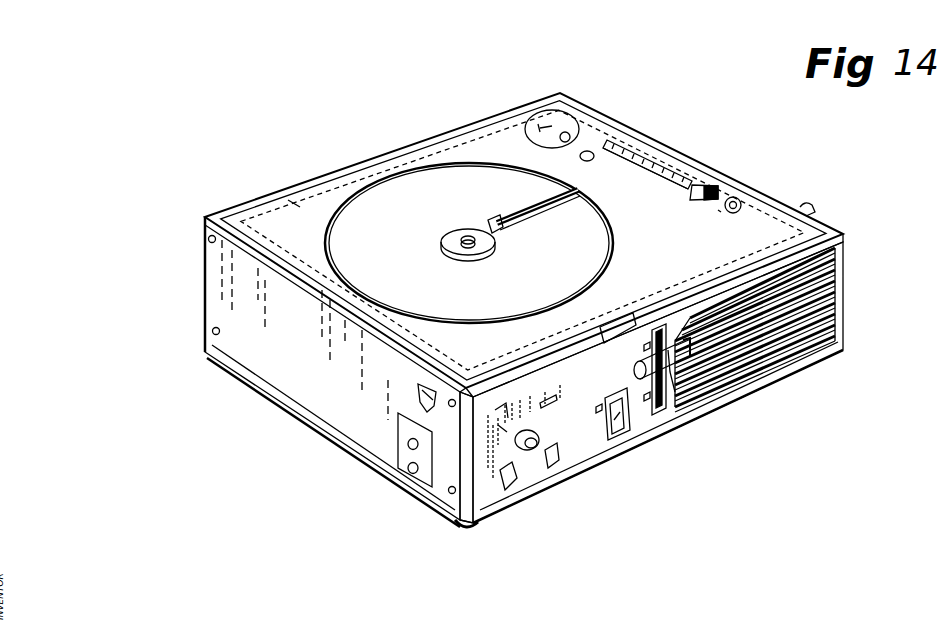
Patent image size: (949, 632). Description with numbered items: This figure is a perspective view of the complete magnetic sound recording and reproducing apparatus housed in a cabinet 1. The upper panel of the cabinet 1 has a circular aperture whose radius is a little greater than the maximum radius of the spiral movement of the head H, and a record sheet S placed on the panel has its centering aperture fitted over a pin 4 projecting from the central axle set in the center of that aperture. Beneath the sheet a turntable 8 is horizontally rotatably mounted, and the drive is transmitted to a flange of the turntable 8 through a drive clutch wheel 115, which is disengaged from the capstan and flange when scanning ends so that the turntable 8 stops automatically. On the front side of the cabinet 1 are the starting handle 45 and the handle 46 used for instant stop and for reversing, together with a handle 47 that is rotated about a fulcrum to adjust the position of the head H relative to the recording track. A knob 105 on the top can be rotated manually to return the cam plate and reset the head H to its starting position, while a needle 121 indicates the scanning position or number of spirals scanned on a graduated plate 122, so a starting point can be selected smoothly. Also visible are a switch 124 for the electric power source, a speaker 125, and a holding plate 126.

The cabinet 1 is at (270, 406).
The pin 4 is at (457, 233).
The turntable 8 is at (357, 203).
The record sheet S is at (293, 205).
The head H is at (495, 220).
The knob 105 is at (540, 120).
The needle 121 is at (622, 143).
The graduated plate 122 is at (653, 158).
The speaker 125 is at (800, 374).
The drive clutch wheel 115 is at (740, 200).
The holding plate 126 is at (205, 222).
The switch for an electric power source 124 is at (477, 457).
The handle 47 is at (620, 432).
The handle for instant stop and reversing 46 is at (662, 398).
The starting handle 45 is at (690, 375).